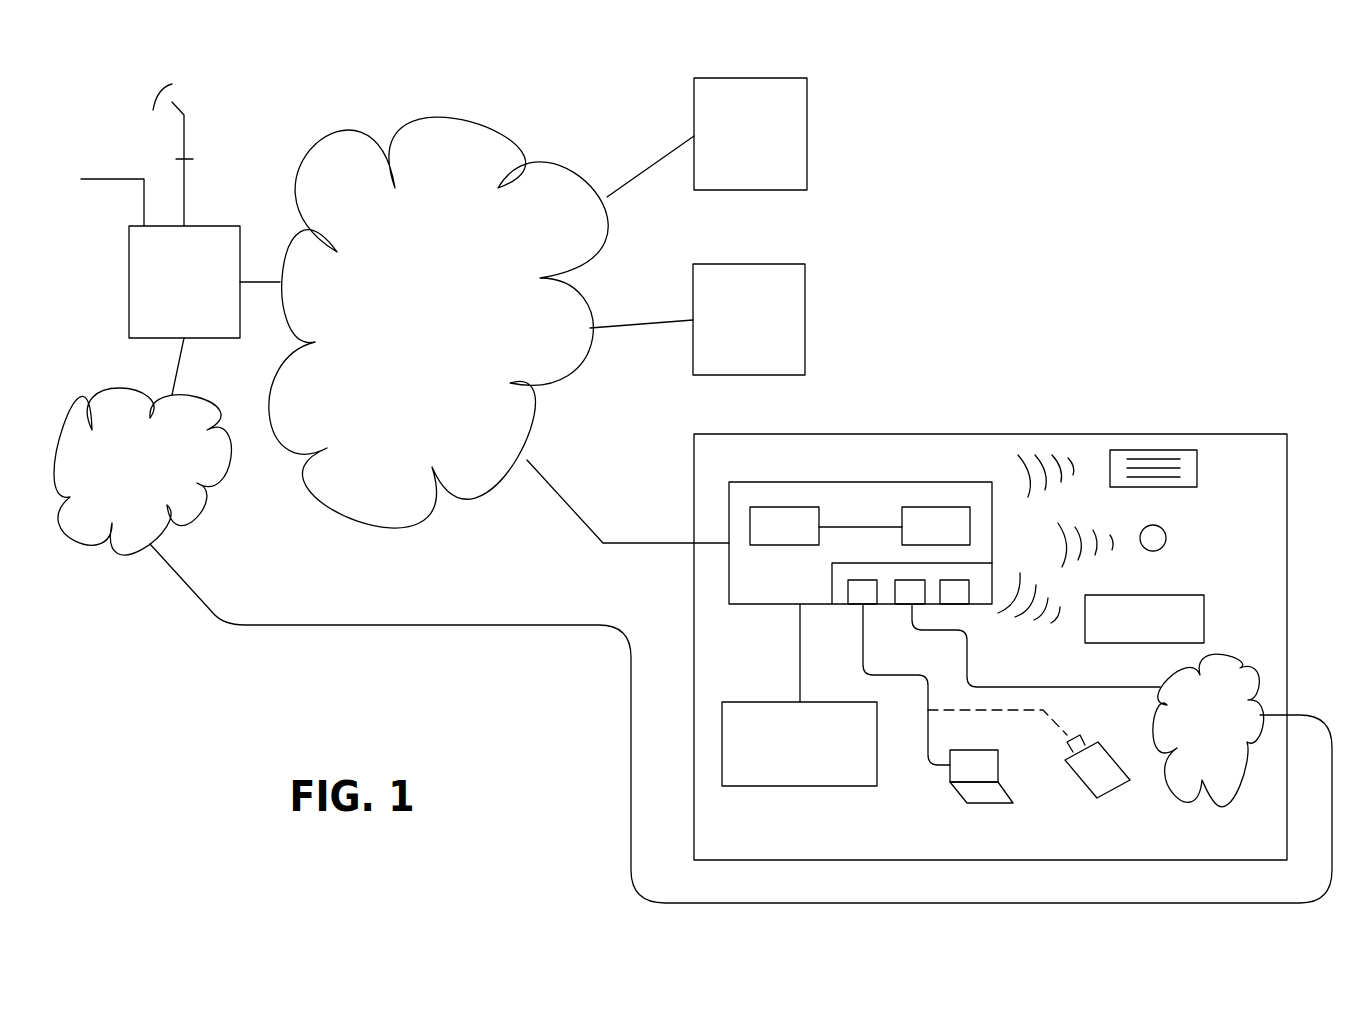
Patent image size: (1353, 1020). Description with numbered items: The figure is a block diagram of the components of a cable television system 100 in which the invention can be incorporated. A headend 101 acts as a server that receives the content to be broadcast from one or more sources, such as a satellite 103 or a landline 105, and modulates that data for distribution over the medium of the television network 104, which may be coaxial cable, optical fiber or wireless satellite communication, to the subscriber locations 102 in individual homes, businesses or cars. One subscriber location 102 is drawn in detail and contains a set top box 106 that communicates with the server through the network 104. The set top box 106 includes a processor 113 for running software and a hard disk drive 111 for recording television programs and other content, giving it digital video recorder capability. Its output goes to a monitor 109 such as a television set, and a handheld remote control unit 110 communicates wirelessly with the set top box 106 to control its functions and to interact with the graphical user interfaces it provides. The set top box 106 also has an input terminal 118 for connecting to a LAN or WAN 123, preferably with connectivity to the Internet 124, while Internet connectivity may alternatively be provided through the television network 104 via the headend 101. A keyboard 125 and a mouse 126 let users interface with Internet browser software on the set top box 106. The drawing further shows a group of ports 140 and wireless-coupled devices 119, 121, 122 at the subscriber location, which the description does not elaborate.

The cable television system 100 is at (625, 60).
The headend 101 is at (128, 282).
The subscriber locations 102 is at (807, 135).
The satellite 103 is at (178, 100).
The network 104 is at (455, 110).
The landline 105 is at (93, 178).
The set top box 106 is at (858, 482).
The monitor 109 is at (760, 786).
The handheld remote control unit 110 is at (1204, 618).
The hard disk drive 111 is at (948, 507).
The processor 113 is at (787, 507).
The input terminal 118 is at (892, 593).
The wireless interface 119 is at (972, 595).
The laptop computer 121 is at (957, 793).
The mobile device 122 is at (1085, 785).
The LAN or WAN 123 is at (1215, 803).
The Internet 124 is at (202, 510).
The keyboard 125 is at (1197, 462).
The mouse 126 is at (1145, 550).
The interface ports 140 is at (847, 588).